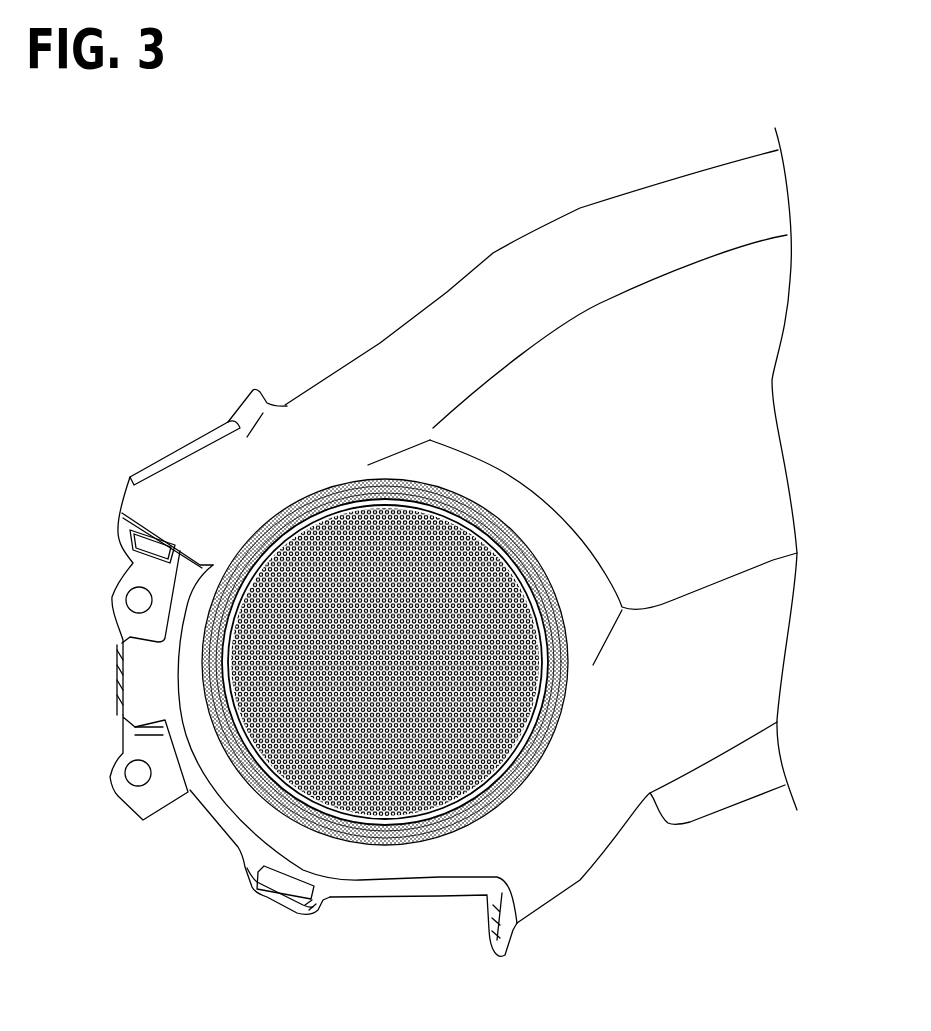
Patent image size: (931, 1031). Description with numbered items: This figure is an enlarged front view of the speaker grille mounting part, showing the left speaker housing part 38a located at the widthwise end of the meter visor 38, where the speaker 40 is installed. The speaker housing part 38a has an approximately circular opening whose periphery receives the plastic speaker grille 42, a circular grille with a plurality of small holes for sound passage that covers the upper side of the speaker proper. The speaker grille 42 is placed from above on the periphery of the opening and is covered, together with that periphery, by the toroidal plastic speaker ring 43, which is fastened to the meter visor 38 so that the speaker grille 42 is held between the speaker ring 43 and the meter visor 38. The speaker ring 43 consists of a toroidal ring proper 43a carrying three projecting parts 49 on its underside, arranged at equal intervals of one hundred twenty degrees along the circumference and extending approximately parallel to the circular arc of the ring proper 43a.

The meter visor 38 is at (650, 182).
The speaker housing part 38a is at (230, 550).
The speaker 40 is at (432, 680).
The speaker grille 42 is at (432, 680).
The speaker ring 43 is at (520, 792).
The ring proper 43a is at (247, 810).
The projecting parts 49 is at (283, 512).